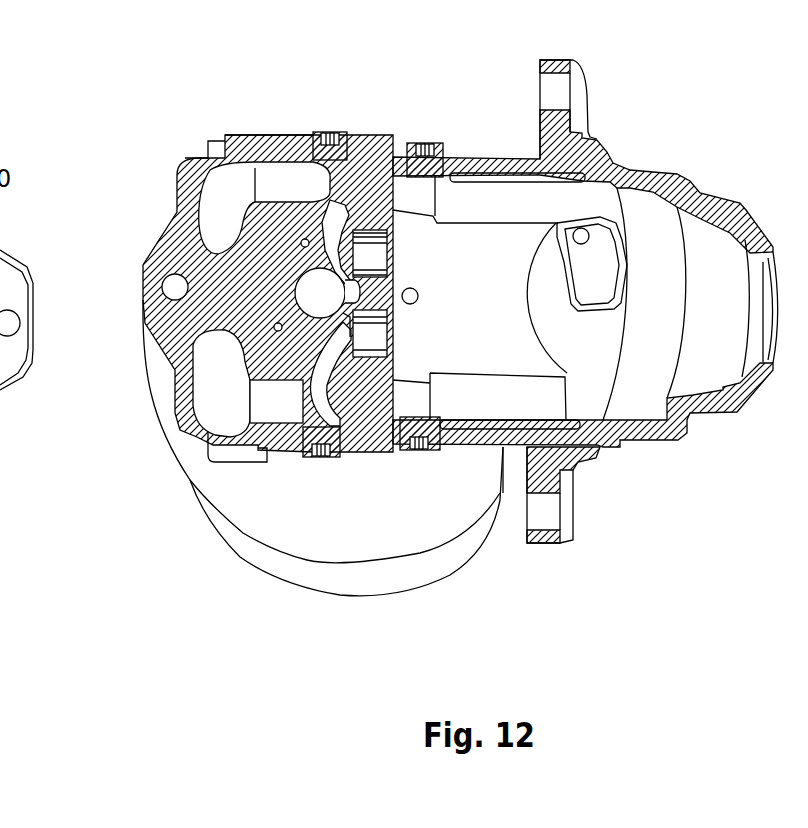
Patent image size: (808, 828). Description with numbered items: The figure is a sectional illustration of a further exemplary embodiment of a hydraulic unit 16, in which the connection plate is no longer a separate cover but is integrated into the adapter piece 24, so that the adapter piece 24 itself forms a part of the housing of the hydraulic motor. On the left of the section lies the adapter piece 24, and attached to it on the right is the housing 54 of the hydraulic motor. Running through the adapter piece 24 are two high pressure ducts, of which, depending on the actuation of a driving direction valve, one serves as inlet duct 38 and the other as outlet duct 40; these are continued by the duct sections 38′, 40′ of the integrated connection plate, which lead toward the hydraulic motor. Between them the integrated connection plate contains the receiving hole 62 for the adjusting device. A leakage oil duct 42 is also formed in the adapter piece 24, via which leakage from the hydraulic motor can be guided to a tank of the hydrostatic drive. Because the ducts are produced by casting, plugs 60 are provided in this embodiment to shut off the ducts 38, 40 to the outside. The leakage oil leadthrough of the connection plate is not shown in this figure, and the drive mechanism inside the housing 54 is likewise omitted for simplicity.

The hydraulic unit 16 is at (322, 108).
The adapter piece 24 is at (193, 154).
The inlet duct 38 is at (263, 133).
The duct section 38′ is at (364, 170).
The outlet duct 40 is at (216, 378).
The duct section 40′ is at (316, 370).
The leakage oil duct 42 is at (165, 276).
The housing 54 is at (657, 173).
The plugs 60 is at (338, 458).
The receiving hole 62 is at (297, 291).